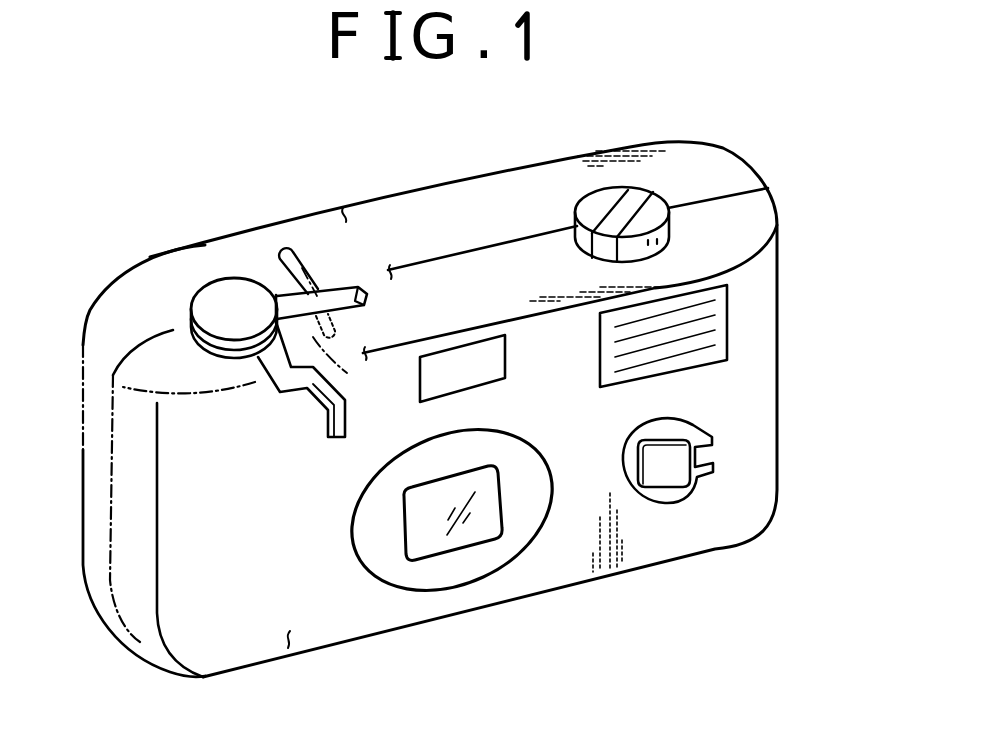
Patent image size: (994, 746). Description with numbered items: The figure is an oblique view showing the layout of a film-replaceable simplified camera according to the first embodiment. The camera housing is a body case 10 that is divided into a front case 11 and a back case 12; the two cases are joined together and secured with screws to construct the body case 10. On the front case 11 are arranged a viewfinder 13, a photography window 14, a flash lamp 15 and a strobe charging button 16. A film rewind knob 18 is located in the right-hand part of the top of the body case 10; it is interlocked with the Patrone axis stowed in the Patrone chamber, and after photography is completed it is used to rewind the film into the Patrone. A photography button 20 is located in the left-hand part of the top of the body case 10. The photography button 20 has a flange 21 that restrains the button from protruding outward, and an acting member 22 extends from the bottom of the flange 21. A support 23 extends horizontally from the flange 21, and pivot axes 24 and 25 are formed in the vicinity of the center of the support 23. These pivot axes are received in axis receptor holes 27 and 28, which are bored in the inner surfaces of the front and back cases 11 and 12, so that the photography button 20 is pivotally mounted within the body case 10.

The body case 10 is at (413, 176).
The front case 11 is at (773, 382).
The back case 12 is at (697, 143).
The viewfinder 13 is at (497, 367).
The photography window 14 is at (477, 537).
The flash lamp 15 is at (720, 302).
The strobe charging button 16 is at (673, 472).
The film rewind knob 18 is at (592, 207).
The photography button 20 is at (217, 290).
The flange 21 is at (207, 355).
The acting member 22 is at (327, 423).
The support 23 is at (278, 290).
The pivot axis 24 is at (287, 257).
The pivot axis 25 is at (330, 310).
The axis receptor hole 27 is at (323, 278).
The axis receptor hole 28 is at (343, 369).